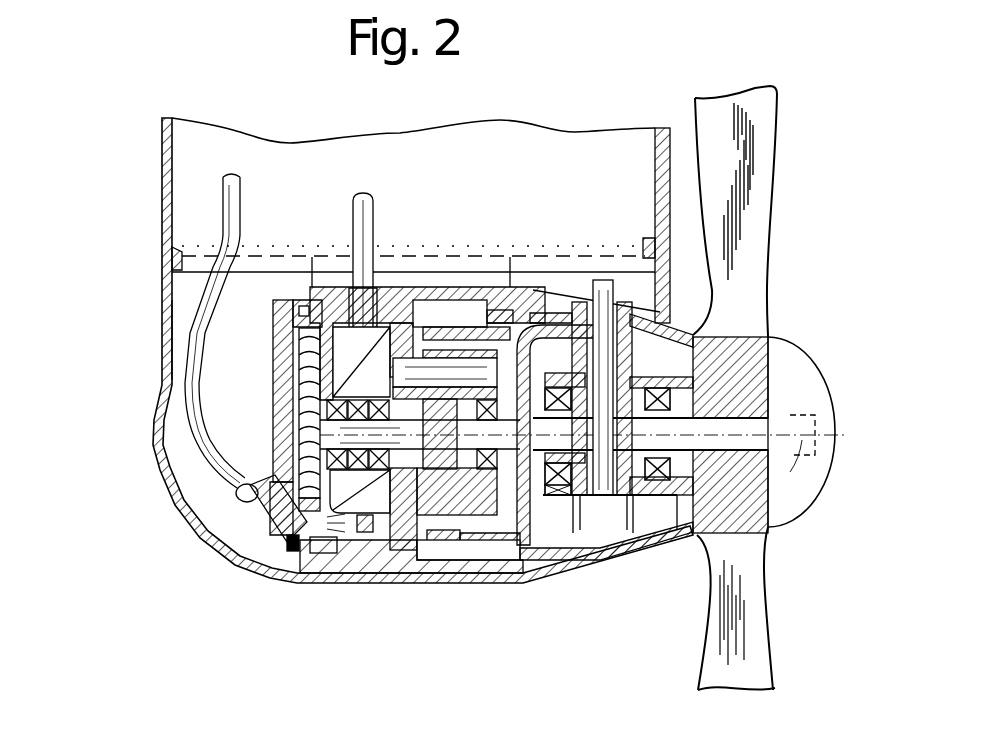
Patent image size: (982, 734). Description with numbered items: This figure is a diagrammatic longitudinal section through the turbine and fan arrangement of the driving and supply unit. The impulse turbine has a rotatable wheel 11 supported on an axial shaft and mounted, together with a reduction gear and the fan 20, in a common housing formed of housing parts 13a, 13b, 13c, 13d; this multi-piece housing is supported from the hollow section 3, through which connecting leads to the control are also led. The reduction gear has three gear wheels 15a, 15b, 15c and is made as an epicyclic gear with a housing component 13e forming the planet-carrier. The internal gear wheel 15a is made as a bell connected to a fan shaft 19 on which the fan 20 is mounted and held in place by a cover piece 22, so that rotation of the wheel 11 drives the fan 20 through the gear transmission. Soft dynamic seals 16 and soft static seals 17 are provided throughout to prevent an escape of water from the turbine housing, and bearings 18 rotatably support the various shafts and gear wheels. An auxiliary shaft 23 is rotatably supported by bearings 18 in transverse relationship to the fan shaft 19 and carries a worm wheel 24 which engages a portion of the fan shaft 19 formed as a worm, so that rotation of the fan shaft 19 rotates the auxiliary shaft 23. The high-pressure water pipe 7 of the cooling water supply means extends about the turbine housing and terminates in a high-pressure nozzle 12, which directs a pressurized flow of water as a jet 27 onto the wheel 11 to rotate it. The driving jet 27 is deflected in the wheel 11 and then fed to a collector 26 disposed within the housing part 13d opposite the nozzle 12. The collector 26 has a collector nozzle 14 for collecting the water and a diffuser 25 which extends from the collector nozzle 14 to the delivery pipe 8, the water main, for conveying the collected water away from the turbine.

The hollow section 3 is at (160, 160).
The high-pressure water pipe 7 is at (358, 212).
The delivery pipe 8 is at (226, 222).
The rotatable wheel 11 is at (315, 548).
The high-pressure nozzle 12 is at (362, 535).
The housing part 13a is at (378, 565).
The housing part 13b is at (593, 548).
The housing part 13c is at (168, 305).
The housing part 13d is at (290, 368).
The housing component 13e is at (399, 330).
The collector nozzle 14 is at (300, 502).
The internal gear wheel 15a is at (455, 562).
The gear wheel 15b is at (478, 548).
The gear wheel 15c is at (418, 562).
The soft dynamic seal 16 is at (335, 405).
The soft static seal 17 is at (298, 305).
The bearing 18 is at (310, 445).
The fan shaft 19 is at (582, 548).
The fan 20 is at (770, 612).
The cover piece 22 is at (782, 485).
The auxiliary shaft 23 is at (600, 280).
The worm wheel 24 is at (652, 558).
The diffuser 25 is at (250, 462).
The collector 26 is at (265, 565).
The jet 27 is at (333, 537).